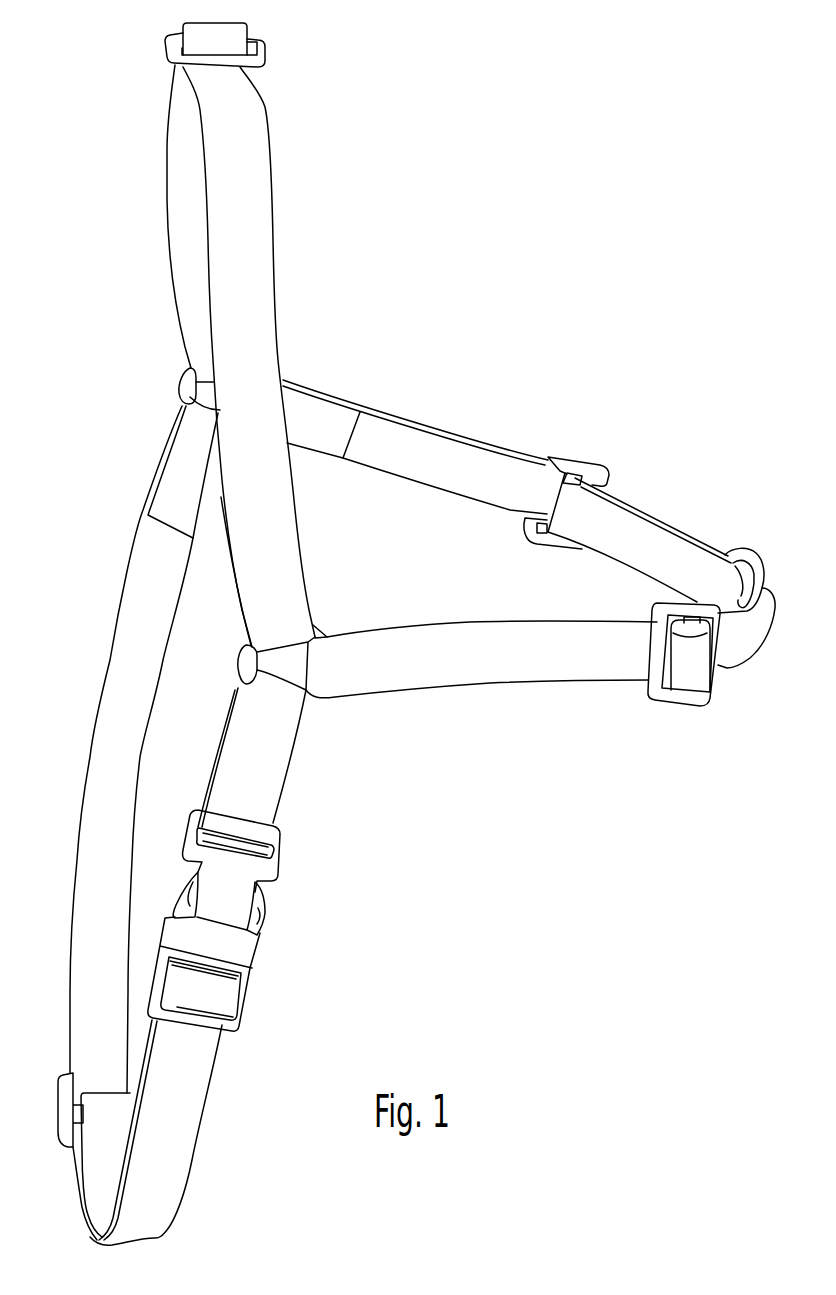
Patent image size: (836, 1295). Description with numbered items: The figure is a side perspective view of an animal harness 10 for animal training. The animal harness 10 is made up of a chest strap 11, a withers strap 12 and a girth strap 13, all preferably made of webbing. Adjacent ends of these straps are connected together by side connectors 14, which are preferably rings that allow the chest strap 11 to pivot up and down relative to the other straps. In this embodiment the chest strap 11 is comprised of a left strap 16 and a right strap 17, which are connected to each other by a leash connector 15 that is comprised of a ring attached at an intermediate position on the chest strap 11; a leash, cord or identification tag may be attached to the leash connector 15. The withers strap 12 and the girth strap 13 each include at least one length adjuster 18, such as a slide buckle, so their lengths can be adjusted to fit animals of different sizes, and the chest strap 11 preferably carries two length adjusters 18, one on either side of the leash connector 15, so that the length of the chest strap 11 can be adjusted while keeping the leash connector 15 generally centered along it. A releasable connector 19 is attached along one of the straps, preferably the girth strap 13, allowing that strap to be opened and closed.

The animal harness 10 is at (355, 319).
The chest strap 11 is at (660, 527).
The withers strap 12 is at (268, 217).
The girth strap 13 is at (97, 757).
The side connector 14 is at (179, 387).
The leash connector 15 is at (753, 557).
The left strap 16 is at (448, 442).
The right strap 17 is at (473, 627).
The length adjuster 18 is at (257, 50).
The releasable connector 19 is at (683, 705).